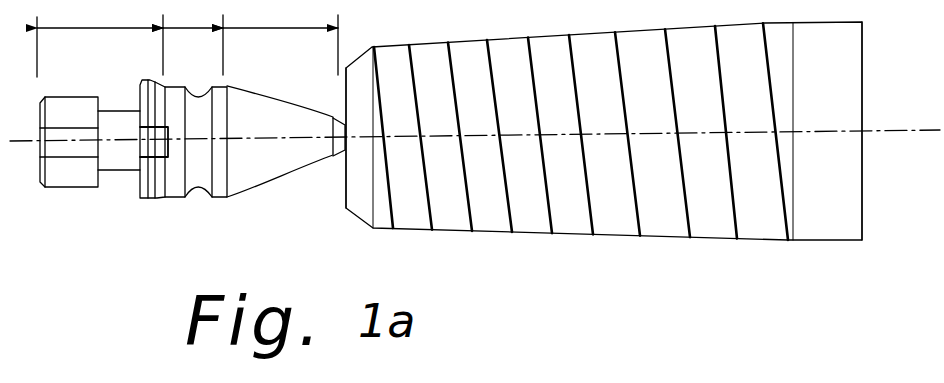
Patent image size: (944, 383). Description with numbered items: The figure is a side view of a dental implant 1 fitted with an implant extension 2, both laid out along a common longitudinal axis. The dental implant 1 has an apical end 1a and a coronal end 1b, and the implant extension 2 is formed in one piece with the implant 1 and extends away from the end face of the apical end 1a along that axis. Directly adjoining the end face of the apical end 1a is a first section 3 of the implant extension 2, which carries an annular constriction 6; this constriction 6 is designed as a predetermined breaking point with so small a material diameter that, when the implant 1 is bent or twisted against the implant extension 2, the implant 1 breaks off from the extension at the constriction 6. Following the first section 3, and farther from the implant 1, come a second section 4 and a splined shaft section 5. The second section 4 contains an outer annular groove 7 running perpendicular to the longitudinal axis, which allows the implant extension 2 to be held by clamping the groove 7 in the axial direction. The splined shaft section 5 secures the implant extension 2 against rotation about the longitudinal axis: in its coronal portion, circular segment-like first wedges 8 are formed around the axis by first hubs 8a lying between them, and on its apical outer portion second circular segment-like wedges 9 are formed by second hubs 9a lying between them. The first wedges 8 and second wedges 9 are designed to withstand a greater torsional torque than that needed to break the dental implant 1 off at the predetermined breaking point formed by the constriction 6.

The dental implant 1 is at (527, 247).
The apical end 1a is at (362, 204).
The coronal end 1b is at (845, 200).
The implant extension 2 is at (183, 174).
The first section 3 is at (280, 37).
The second section 4 is at (193, 37).
The splined shaft section 5 is at (100, 38).
The annular constriction 6 is at (340, 165).
The outer annular groove 7 is at (200, 190).
The first wedges 8 is at (124, 181).
The first hubs 8a is at (138, 150).
The second wedges 9 is at (63, 149).
The second hubs 9a is at (62, 135).